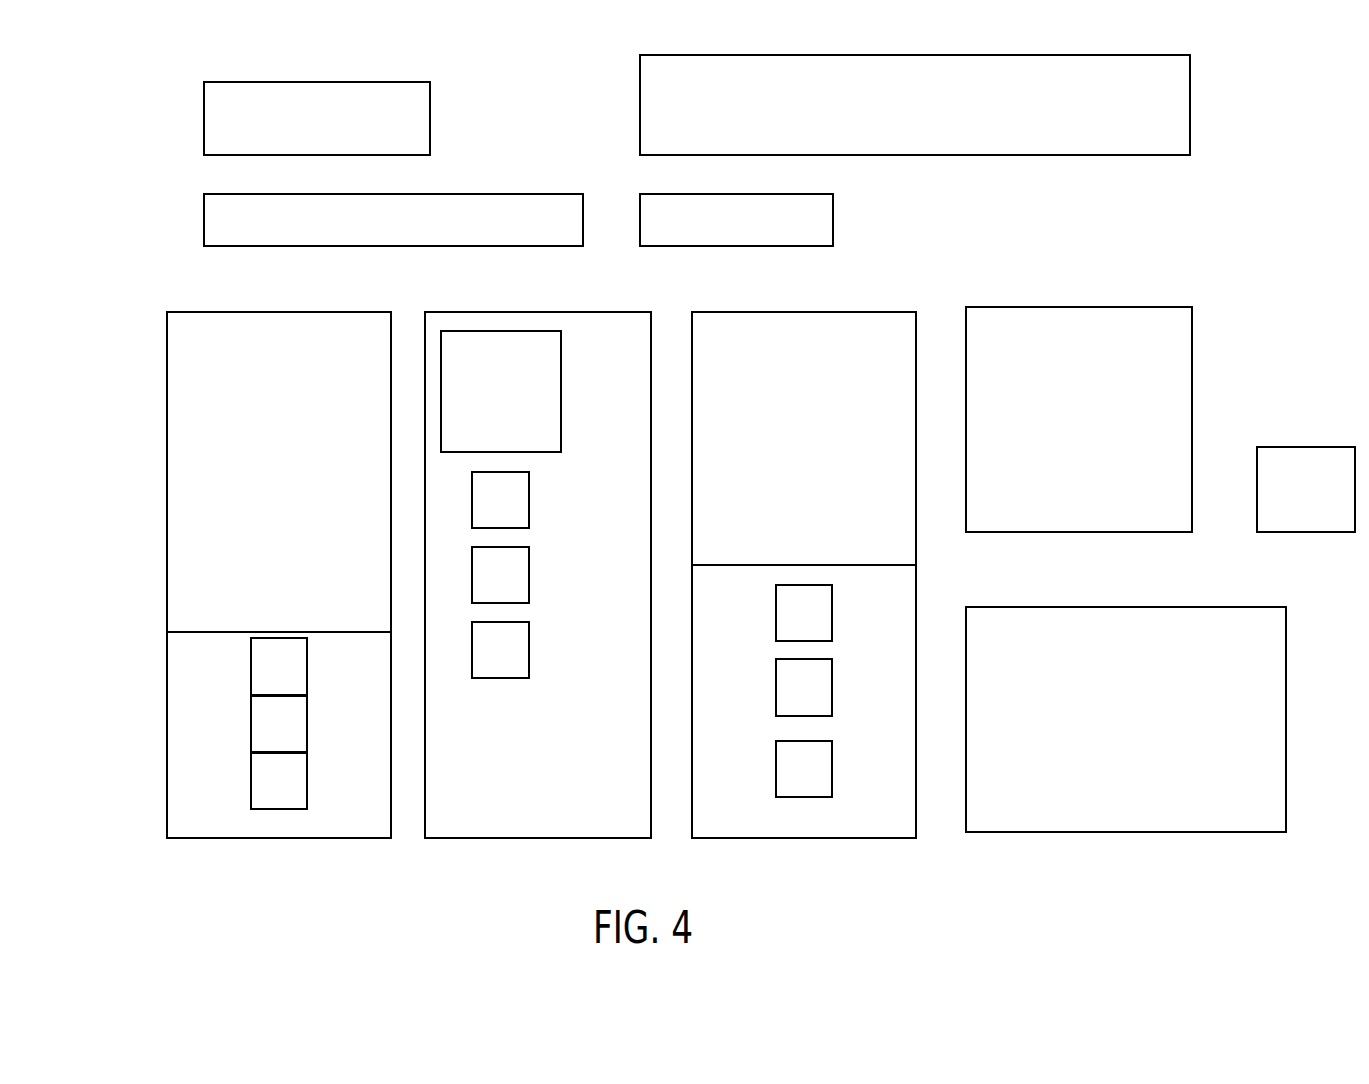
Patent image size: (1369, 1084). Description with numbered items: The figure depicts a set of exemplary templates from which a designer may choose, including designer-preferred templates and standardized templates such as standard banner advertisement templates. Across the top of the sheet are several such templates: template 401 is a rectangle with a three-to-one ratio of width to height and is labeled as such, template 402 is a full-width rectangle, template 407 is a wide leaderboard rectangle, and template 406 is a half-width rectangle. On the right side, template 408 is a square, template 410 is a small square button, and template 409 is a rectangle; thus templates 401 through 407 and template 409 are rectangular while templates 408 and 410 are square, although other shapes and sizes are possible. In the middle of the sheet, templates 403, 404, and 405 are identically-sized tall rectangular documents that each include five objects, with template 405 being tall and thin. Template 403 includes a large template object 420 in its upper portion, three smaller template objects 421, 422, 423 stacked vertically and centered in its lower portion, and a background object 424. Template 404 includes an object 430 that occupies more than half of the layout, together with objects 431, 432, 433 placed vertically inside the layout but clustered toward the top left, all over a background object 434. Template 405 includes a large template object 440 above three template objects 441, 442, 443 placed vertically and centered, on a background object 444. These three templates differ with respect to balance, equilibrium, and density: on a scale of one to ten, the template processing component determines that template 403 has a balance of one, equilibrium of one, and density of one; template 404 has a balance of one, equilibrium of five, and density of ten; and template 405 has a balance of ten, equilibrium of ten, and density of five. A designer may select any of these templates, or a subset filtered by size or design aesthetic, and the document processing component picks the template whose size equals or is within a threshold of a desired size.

The template 401 is at (240, 108).
The template 402 is at (237, 223).
The template 403 is at (256, 575).
The template 404 is at (538, 602).
The template 405 is at (804, 598).
The template 406 is at (797, 233).
The template 407 is at (653, 112).
The template 408 is at (1132, 368).
The template 409 is at (1218, 688).
The template 410 is at (1317, 443).
The template object 420 is at (264, 481).
The template object 421 is at (264, 676).
The template object 422 is at (264, 735).
The template object 423 is at (264, 791).
The background object 424 is at (256, 735).
The object 430 is at (486, 401).
The object 431 is at (486, 510).
The object 432 is at (486, 585).
The object 433 is at (486, 660).
The background object 434 is at (512, 682).
The template object 440 is at (790, 448).
The template object 441 is at (790, 621).
The template object 442 is at (790, 696).
The template object 443 is at (790, 778).
The background object 444 is at (804, 725).